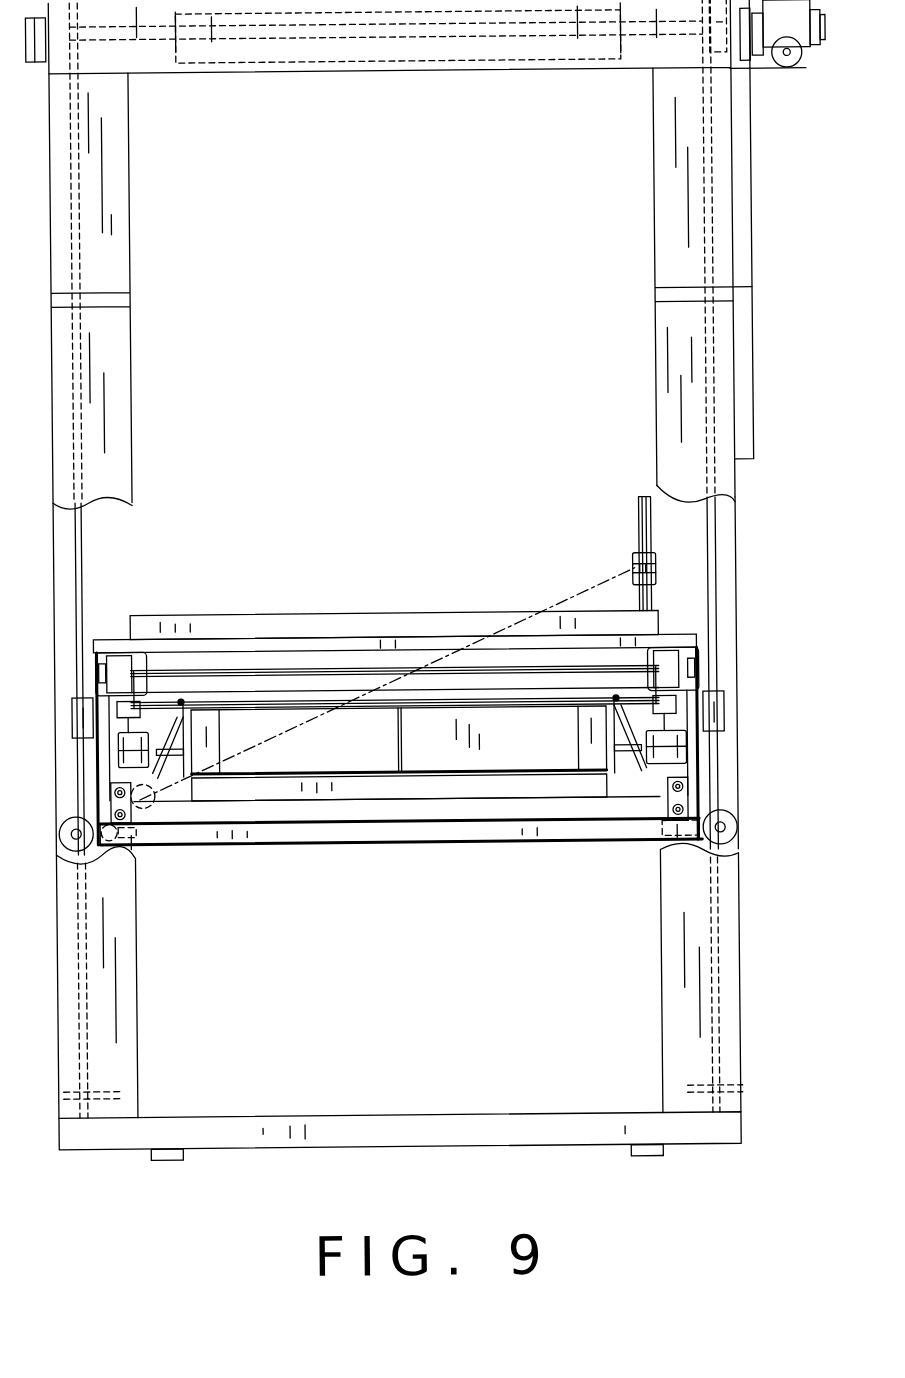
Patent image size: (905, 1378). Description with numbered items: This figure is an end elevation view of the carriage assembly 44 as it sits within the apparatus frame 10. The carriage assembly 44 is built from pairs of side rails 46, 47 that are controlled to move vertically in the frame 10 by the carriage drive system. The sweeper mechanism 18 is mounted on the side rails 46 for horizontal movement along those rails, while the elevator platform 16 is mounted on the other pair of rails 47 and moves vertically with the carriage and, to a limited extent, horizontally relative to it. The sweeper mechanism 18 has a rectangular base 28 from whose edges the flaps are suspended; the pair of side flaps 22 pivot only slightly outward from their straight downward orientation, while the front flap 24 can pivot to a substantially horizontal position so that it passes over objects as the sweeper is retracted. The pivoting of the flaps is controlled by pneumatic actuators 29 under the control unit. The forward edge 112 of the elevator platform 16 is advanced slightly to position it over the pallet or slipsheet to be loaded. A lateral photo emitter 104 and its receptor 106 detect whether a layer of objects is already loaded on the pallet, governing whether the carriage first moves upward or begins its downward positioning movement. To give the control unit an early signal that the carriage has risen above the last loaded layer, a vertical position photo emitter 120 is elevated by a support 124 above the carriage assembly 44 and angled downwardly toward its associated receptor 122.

The apparatus frame 10 is at (112, 192).
The carriage assembly 44 is at (367, 598).
The rectangular base 28 is at (209, 696).
The sweeper mechanism 18 is at (247, 736).
The front flap 24 is at (517, 741).
The elevator platform 16 is at (430, 826).
The forward edge 112 is at (318, 821).
The side rails 46 is at (99, 665).
The side flaps 22 is at (121, 709).
The pneumatic actuators 29 is at (123, 788).
The side rails 47 is at (70, 845).
The receptor 122 is at (138, 802).
The receptor 106 is at (130, 837).
The lateral photo emitter 104 is at (671, 848).
The support 124 is at (641, 507).
The vertical position photo emitter 120 is at (632, 572).